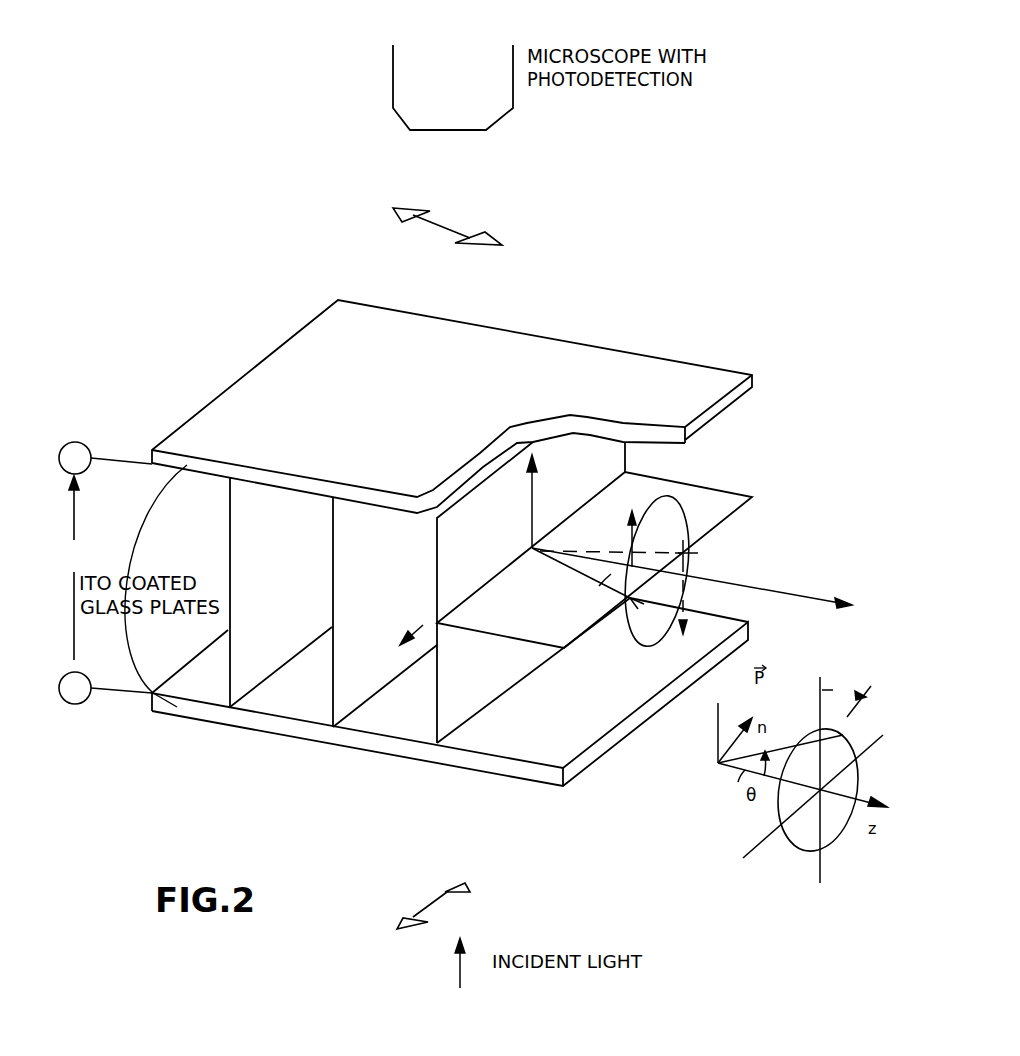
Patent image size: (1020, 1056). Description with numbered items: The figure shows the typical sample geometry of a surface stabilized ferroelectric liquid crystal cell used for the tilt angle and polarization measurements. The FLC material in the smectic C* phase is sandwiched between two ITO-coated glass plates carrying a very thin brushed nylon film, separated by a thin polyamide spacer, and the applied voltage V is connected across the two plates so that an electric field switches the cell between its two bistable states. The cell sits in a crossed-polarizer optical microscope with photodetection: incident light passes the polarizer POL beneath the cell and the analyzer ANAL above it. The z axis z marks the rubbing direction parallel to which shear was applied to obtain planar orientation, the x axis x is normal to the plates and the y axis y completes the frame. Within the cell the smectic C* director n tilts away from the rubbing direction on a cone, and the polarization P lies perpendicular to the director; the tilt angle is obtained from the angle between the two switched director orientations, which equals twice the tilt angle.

The analyzer ANAL is at (484, 227).
The polarizer POL is at (467, 894).
The applied voltage V is at (105, 573).
The polarization P is at (629, 489).
The director n is at (584, 578).
The x axis x is at (522, 501).
The y axis y is at (411, 622).
The z axis (rubbing direction) z is at (692, 578).